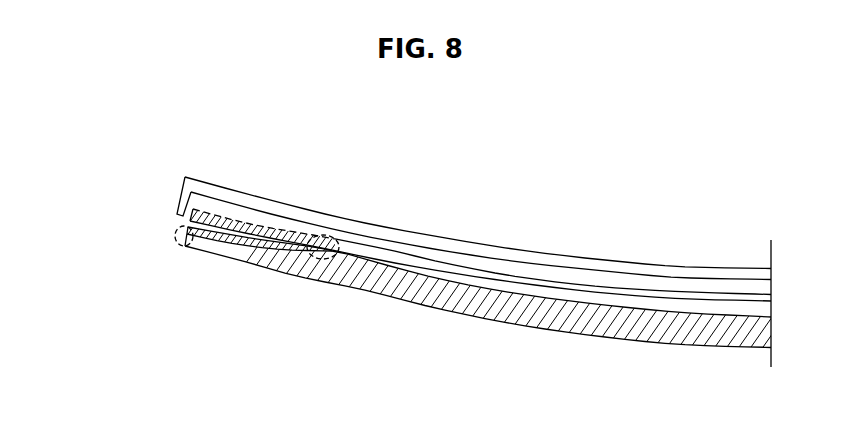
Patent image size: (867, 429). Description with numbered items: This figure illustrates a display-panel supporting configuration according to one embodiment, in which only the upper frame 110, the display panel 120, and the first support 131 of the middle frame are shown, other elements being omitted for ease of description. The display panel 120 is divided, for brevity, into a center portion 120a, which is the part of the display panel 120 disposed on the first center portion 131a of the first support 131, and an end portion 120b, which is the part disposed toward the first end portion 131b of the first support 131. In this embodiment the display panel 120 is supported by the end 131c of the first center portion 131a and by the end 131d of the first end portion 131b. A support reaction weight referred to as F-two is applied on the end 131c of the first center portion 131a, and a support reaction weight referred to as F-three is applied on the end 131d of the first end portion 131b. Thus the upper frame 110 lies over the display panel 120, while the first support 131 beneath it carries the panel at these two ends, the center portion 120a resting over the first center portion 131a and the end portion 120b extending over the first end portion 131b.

The upper frame 110 is at (179, 199).
The display panel 120 is at (247, 137).
The center portion 120a is at (440, 266).
The end portion 120b is at (237, 229).
The first support 131 is at (405, 368).
The first center portion 131a is at (373, 288).
The first end portion 131b is at (232, 246).
The end of the first center portion 131c is at (321, 241).
The end of the first end portion 131d is at (193, 247).